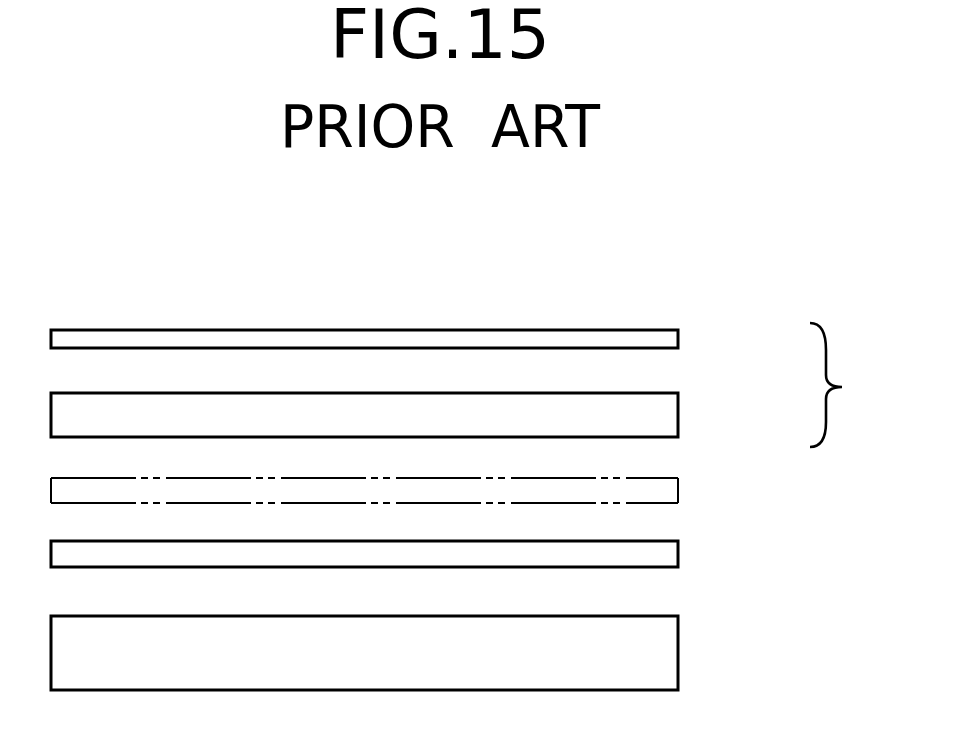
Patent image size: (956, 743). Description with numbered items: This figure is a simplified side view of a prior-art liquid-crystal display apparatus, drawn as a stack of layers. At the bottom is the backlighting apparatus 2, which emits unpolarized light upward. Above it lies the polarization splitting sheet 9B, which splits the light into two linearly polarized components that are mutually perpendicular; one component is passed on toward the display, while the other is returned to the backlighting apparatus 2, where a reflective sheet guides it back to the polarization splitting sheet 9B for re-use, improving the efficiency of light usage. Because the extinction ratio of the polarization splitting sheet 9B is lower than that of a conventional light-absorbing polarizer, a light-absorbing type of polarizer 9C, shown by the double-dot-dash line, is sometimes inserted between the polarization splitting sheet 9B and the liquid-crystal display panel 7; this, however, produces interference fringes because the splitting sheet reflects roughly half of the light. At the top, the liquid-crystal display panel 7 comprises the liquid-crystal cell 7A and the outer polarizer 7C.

The liquid-crystal display panel 7 is at (841, 385).
The liquid-crystal cell 7A is at (660, 418).
The polarizer 7C is at (660, 342).
The light-absorbing type polarizer 9C is at (660, 491).
The polarization splitting sheet 9B is at (660, 554).
The backlighting apparatus 2 is at (660, 653).